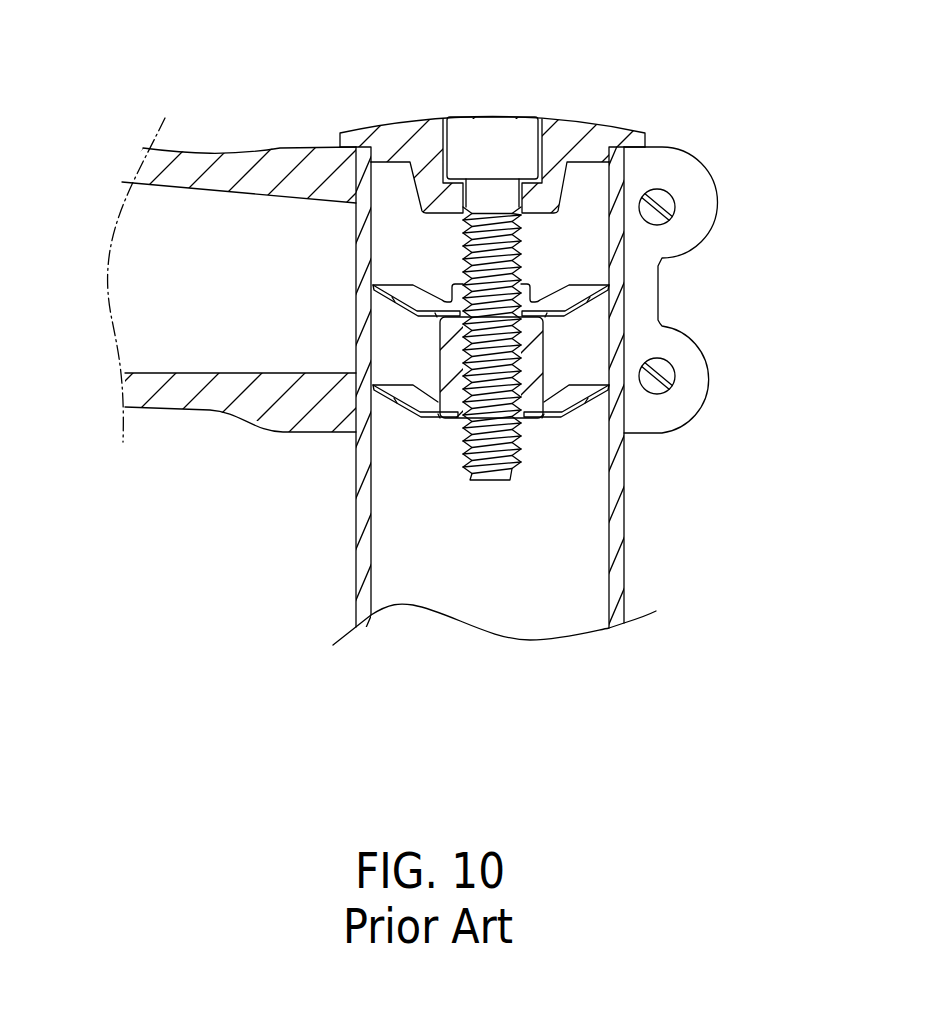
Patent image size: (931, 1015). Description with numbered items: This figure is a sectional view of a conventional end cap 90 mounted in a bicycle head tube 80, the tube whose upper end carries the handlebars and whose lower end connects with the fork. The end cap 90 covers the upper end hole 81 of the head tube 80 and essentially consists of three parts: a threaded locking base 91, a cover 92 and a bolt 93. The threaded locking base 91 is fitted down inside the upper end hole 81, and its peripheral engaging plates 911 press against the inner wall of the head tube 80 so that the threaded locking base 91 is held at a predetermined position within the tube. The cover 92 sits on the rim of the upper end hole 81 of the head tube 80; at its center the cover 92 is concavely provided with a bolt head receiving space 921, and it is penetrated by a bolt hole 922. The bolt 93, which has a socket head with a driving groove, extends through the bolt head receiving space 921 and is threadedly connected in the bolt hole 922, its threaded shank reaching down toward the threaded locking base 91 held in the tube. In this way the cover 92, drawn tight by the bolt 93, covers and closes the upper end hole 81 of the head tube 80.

The head tube 80 is at (645, 544).
The upper end hole 81 is at (418, 462).
The end cap 90 is at (612, 112).
The threaded locking base 91 is at (606, 415).
The peripheral engaging plates 911 is at (609, 298).
The cover 92 is at (568, 114).
The bolt head receiving space 921 is at (443, 150).
The bolt hole 922 is at (520, 197).
The bolt 93 is at (487, 106).